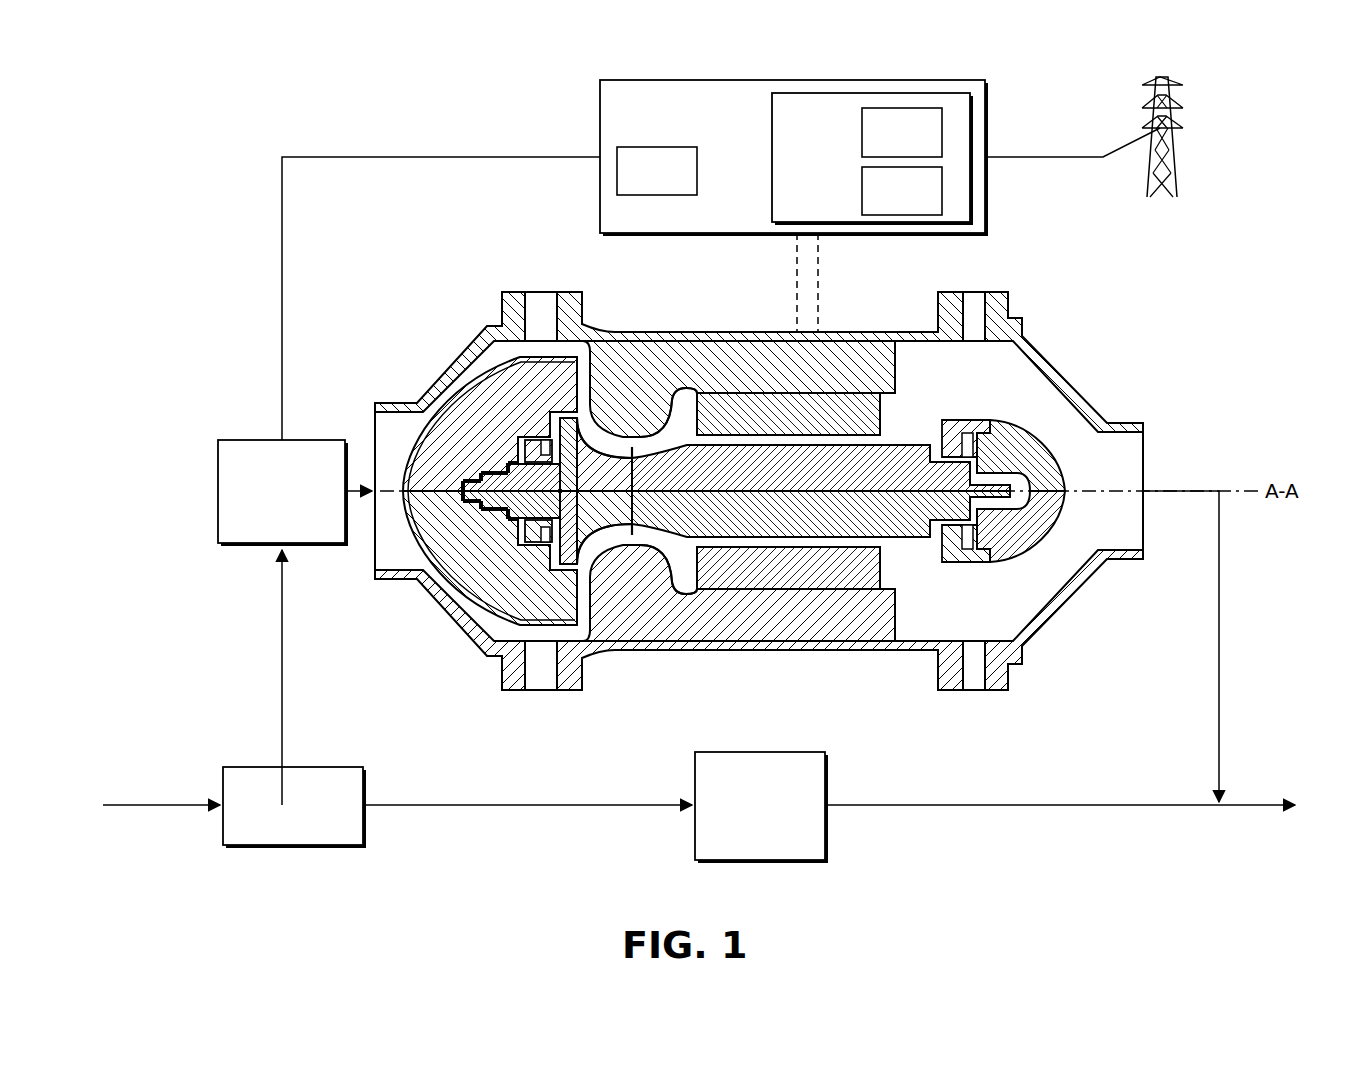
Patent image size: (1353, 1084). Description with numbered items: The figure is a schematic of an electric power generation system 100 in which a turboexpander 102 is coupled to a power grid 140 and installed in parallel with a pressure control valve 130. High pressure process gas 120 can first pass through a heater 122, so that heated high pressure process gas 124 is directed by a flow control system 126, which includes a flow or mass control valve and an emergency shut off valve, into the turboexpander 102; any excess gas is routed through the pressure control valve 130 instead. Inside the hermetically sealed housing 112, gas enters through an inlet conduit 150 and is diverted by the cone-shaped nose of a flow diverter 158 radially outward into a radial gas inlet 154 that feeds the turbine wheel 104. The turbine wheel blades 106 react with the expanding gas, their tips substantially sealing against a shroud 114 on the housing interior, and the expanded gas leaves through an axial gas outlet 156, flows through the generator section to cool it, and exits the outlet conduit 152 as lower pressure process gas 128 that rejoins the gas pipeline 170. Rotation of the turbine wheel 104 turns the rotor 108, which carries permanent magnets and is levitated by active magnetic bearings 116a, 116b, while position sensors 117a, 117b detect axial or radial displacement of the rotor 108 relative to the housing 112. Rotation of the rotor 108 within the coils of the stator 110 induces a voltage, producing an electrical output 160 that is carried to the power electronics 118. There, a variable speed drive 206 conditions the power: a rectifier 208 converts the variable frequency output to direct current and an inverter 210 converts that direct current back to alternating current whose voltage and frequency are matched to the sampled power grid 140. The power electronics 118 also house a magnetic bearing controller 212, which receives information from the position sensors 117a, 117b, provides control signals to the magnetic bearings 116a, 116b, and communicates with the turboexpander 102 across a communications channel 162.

The electric power generation system 100 is at (170, 133).
The turboexpander 102 is at (420, 336).
The turbine wheel 104 is at (570, 548).
The turbine wheel blades 106 is at (625, 545).
The rotor 108 is at (893, 535).
The stator 110 is at (788, 491).
The turboexpander housing 112 is at (845, 651).
The shroud 114 is at (592, 562).
The magnetic bearing 116a is at (532, 538).
The magnetic bearing 116b is at (952, 447).
The position sensor 117a is at (547, 547).
The position sensor 117b is at (970, 450).
The power electronics 118 is at (756, 153).
The high pressure process gas 120 is at (178, 808).
The heater 122 is at (294, 807).
The heated high pressure process gas 124 is at (282, 642).
The flow control system 126 is at (409, 351).
The lower pressure process gas 128 is at (1219, 652).
The pressure control valve 130 is at (761, 807).
The power grid 140 is at (1150, 180).
The inlet conduit 150 is at (375, 424).
The outlet conduit 152 is at (1146, 462).
The radial gas inlet 154 is at (597, 387).
The axial gas outlet 156 is at (643, 447).
The flow diverter 158 is at (492, 380).
The electrical output 160 is at (825, 285).
The communications channel 162 is at (790, 285).
The gas pipeline 170 is at (1040, 808).
The variable speed drive 206 is at (872, 159).
The rectifier 208 is at (902, 132).
The inverter 210 is at (902, 191).
The magnetic bearing controller 212 is at (657, 171).